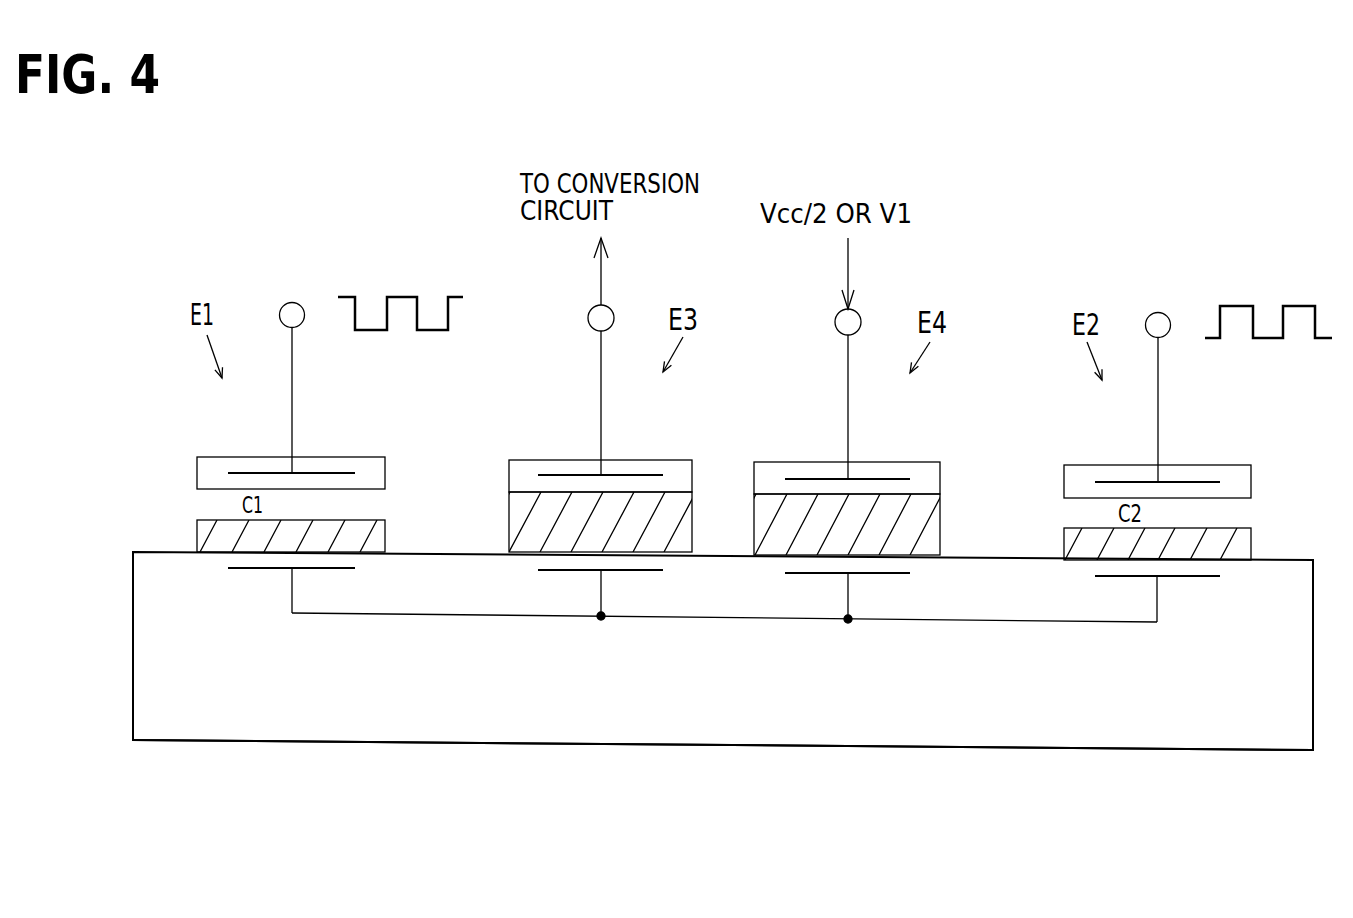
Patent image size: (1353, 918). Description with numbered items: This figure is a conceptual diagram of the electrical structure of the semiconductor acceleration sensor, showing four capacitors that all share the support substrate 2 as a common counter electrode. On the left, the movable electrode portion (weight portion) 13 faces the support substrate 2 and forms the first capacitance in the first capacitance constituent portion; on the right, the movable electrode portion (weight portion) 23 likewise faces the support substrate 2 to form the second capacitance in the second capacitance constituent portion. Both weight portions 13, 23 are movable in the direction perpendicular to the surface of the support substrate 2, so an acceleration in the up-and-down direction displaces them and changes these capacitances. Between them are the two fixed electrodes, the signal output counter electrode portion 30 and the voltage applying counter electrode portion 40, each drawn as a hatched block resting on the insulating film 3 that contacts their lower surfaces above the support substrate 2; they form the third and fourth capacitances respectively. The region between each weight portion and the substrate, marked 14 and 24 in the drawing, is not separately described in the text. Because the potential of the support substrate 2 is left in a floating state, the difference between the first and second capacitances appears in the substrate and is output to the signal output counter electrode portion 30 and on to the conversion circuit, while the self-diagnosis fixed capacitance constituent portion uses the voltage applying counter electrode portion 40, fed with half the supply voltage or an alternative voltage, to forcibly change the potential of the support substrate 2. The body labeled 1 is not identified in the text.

The substrate 1 is at (1037, 750).
The support substrate 2 is at (1148, 750).
The insulating film 3 is at (692, 510).
The movable electrode portion (weight portion) 13 is at (386, 470).
The dielectric gap 14 is at (357, 507).
The movable electrode portion (weight portion) 23 is at (1252, 479).
The dielectric gap 24 is at (1224, 514).
The signal output counter electrode portion 30 is at (678, 460).
The voltage applying counter electrode portion (frame portion) 40 is at (922, 462).